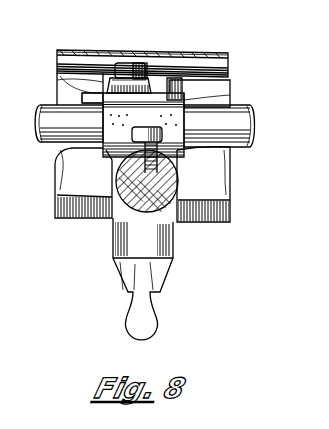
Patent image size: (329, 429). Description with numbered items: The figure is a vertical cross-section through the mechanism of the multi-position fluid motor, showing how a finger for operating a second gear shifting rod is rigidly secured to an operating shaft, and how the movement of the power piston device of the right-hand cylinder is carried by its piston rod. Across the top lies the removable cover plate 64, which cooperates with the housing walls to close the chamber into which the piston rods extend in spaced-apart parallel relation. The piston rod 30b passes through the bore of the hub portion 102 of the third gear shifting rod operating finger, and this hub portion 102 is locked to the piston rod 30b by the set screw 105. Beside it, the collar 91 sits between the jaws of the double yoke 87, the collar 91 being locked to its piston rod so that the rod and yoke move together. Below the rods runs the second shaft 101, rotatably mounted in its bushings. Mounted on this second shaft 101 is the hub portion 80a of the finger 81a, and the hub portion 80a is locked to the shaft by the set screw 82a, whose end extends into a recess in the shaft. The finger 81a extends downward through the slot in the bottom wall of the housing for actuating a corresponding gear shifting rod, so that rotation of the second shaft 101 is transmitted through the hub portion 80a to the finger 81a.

The removable cover plate 64 is at (107, 64).
The hub portion 102 is at (110, 58).
The set screw 105 is at (147, 67).
The collar 91 is at (88, 97).
The double yoke 87 is at (228, 84).
The piston rod 30b is at (230, 113).
The set screw 82a is at (100, 147).
The hub portion 80a is at (178, 172).
The second shaft 101 is at (170, 220).
The finger 81a is at (147, 293).